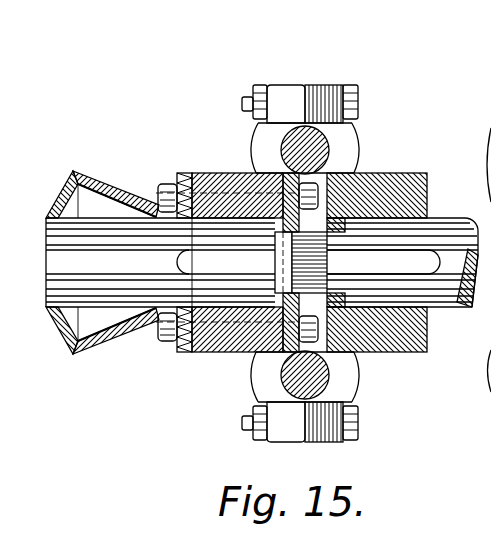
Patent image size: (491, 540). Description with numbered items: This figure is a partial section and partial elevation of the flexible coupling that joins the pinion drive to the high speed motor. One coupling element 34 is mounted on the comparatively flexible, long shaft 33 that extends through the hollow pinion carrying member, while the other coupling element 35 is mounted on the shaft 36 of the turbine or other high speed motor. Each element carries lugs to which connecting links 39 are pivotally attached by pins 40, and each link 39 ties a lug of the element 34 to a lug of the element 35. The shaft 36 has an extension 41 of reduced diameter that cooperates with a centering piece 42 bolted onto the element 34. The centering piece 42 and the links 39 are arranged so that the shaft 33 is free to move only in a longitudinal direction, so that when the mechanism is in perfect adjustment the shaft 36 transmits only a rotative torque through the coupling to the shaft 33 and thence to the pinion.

The shaft 33 is at (153, 275).
The coupling element 34 is at (220, 340).
The coupling element 35 is at (415, 337).
The shaft 36 is at (452, 245).
The connecting link 39 is at (265, 143).
The pin 40 is at (490, 56).
The extension 41 is at (306, 250).
The centering piece 42 is at (305, 302).